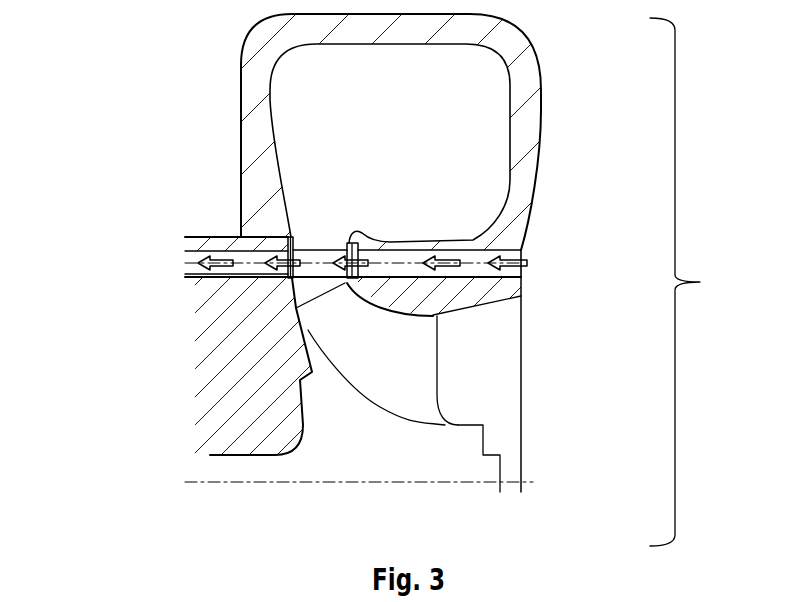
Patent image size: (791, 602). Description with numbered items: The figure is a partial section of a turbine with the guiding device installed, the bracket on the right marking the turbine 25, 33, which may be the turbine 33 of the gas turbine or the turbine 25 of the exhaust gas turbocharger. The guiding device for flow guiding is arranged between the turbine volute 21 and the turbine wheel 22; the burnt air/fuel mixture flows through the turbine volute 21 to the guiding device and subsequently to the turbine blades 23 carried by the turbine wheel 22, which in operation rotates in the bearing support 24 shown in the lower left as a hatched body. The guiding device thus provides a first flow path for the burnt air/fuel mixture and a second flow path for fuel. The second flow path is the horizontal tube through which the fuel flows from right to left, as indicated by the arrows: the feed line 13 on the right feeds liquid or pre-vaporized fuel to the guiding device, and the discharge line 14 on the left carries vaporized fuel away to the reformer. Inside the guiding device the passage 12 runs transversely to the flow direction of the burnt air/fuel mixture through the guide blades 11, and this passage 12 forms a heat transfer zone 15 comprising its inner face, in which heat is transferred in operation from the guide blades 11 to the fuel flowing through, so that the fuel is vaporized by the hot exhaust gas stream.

The guide blades 11 is at (322, 262).
The passage 12 is at (314, 252).
The feed line 13 is at (508, 271).
The discharge line 14 is at (186, 267).
The heat transfer zone 15 is at (352, 260).
The turbine volute 21 is at (513, 77).
The turbine wheel 22 is at (448, 457).
The turbine blades 23 is at (408, 347).
The bearing support 24 is at (267, 427).
The turbine 25 is at (720, 282).
The turbine 33 is at (395, 301).